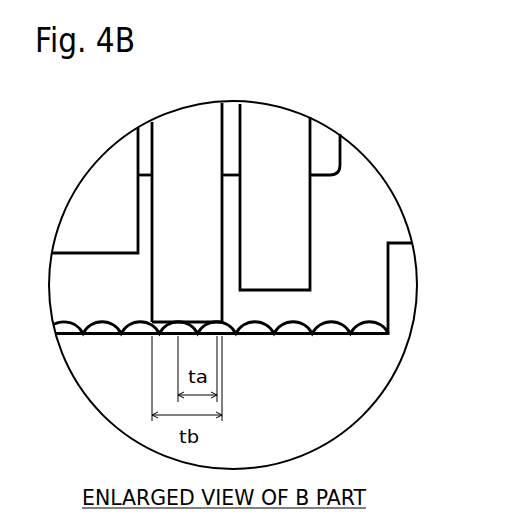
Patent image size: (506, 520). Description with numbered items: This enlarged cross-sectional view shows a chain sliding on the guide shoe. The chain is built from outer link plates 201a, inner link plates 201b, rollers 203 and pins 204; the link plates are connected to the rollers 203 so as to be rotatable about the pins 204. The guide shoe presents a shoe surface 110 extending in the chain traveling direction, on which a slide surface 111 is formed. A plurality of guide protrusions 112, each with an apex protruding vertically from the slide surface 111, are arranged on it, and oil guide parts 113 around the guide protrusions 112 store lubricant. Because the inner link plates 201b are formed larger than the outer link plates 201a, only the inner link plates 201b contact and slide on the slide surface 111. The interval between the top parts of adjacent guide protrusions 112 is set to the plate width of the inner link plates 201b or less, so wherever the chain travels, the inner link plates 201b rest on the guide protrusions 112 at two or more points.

The roller 203 is at (85, 222).
The inner link plate 201b is at (175, 245).
The outer link plate 201a is at (265, 203).
The pin 204 is at (328, 152).
The slide surface 111 is at (328, 317).
The shoe surface 110 is at (267, 272).
The guide protrusion 112 is at (102, 334).
The oil guide part 113 is at (127, 320).